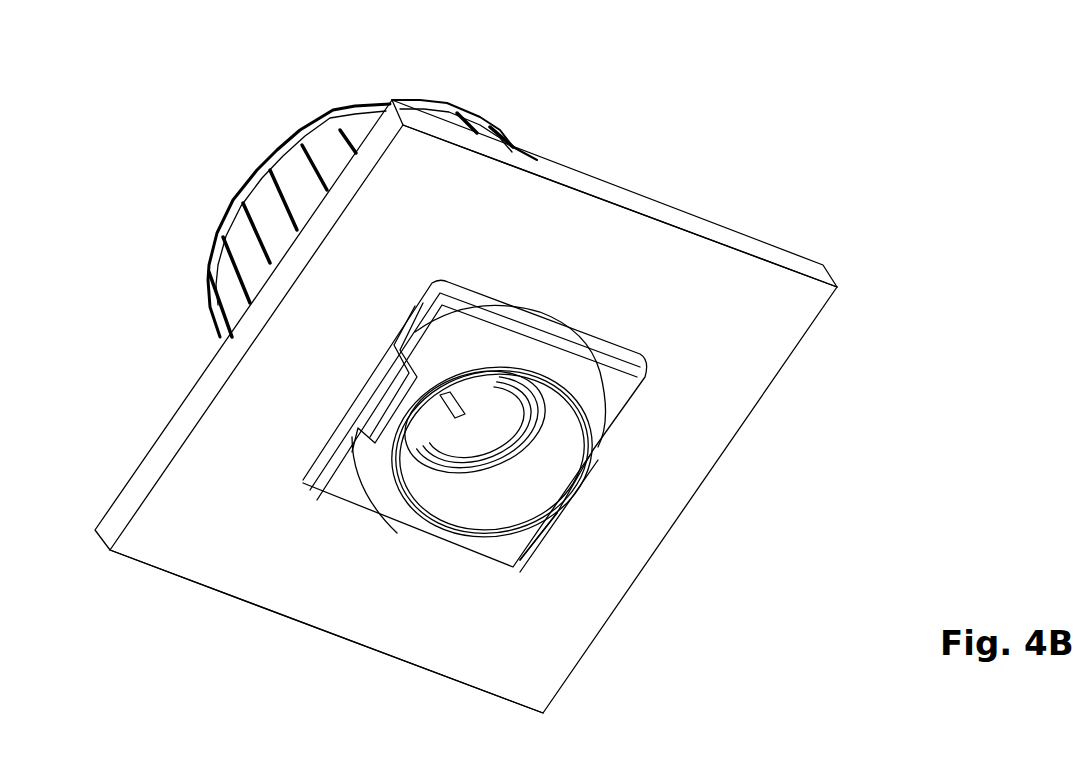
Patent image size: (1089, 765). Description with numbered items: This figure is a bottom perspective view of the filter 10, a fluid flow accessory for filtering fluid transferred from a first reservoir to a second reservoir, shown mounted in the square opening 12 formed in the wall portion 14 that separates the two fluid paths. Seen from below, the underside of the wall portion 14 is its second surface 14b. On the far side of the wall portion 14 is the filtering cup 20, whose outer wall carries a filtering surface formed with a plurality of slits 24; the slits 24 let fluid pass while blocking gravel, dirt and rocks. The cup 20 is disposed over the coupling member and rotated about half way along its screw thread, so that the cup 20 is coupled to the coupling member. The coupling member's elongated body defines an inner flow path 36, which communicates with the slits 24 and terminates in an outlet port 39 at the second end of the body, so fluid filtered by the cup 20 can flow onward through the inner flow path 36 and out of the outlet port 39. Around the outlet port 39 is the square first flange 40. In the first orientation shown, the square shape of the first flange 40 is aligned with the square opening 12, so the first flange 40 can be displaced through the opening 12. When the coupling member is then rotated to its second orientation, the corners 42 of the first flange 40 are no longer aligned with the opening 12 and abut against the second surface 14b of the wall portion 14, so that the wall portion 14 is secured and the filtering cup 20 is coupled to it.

The filter 10 is at (930, 126).
The opening 12 is at (527, 303).
The wall portion 14 is at (793, 267).
The second surface 14b is at (773, 327).
The filtering cup 20 is at (240, 238).
The slits 24 is at (267, 180).
The inner flow path 36 is at (483, 403).
The outlet port 39 is at (550, 473).
The first flange 40 is at (510, 547).
The corners 42 is at (460, 315).